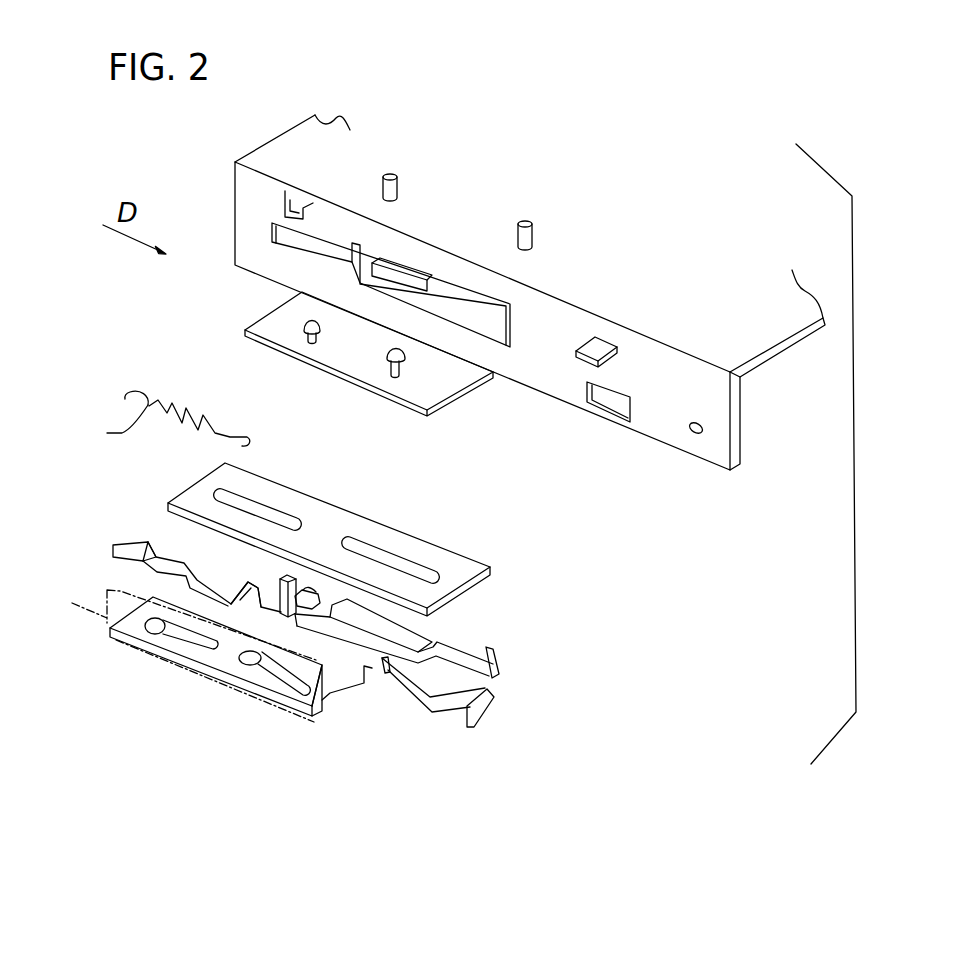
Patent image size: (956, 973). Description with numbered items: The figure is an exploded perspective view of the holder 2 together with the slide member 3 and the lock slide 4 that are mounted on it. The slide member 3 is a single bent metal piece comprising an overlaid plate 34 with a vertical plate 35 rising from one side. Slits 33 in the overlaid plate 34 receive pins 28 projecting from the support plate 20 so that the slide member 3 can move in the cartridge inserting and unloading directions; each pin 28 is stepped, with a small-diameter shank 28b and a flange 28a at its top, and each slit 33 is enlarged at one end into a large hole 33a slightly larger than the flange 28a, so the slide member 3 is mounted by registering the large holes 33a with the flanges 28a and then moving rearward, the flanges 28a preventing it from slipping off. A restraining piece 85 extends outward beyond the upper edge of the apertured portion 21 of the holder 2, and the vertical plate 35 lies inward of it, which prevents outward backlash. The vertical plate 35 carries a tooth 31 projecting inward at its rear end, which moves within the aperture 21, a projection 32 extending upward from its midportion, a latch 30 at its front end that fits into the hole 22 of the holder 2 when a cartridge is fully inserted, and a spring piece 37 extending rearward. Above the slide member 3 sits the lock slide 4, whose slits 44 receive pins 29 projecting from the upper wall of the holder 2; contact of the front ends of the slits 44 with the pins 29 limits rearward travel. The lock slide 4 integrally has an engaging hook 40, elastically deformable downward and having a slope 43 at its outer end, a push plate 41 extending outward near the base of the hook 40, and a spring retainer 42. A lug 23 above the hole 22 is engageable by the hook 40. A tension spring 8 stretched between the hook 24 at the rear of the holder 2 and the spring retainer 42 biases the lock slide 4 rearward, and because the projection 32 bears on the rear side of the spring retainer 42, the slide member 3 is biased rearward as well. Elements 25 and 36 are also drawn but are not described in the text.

The holder 2 is at (755, 330).
The slide member 3 is at (294, 642).
The lock slide 4 is at (449, 563).
The tension spring 8 is at (168, 418).
The support plate 20 is at (440, 377).
The apertured portion 21 is at (452, 284).
The hole 22 is at (621, 406).
The lug 23 is at (597, 348).
The hook 24 is at (302, 186).
The hole 25 is at (690, 437).
The pin 28 is at (273, 378).
The flange 28a is at (306, 324).
The small-diameter shank 28b is at (306, 335).
The pins 29 is at (397, 186).
The latch 30 is at (495, 690).
The tooth 31 is at (252, 583).
The projection 32 is at (273, 588).
The slits 33 is at (204, 645).
The large hole 33a is at (158, 636).
The overlaid plate 34 is at (335, 688).
The vertical plate 35 is at (381, 673).
The imaginary position 36 is at (177, 649).
The spring piece 37 is at (112, 552).
The engaging hook 40 is at (436, 628).
The push plate 41 is at (362, 617).
The spring retainer 42 is at (305, 595).
The slope 43 is at (499, 661).
The slits 44 is at (249, 491).
The restraining piece 85 is at (404, 264).